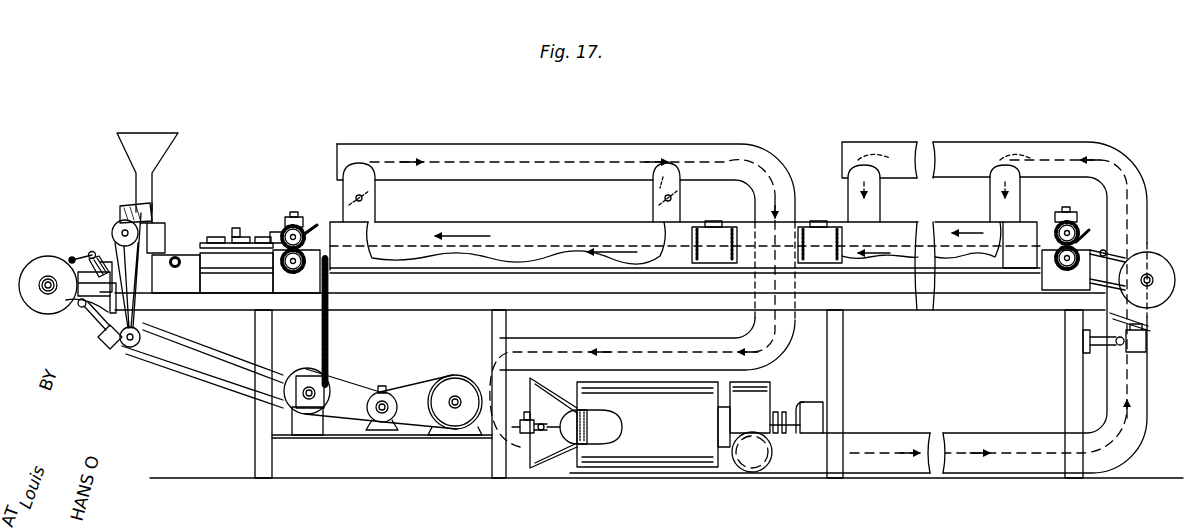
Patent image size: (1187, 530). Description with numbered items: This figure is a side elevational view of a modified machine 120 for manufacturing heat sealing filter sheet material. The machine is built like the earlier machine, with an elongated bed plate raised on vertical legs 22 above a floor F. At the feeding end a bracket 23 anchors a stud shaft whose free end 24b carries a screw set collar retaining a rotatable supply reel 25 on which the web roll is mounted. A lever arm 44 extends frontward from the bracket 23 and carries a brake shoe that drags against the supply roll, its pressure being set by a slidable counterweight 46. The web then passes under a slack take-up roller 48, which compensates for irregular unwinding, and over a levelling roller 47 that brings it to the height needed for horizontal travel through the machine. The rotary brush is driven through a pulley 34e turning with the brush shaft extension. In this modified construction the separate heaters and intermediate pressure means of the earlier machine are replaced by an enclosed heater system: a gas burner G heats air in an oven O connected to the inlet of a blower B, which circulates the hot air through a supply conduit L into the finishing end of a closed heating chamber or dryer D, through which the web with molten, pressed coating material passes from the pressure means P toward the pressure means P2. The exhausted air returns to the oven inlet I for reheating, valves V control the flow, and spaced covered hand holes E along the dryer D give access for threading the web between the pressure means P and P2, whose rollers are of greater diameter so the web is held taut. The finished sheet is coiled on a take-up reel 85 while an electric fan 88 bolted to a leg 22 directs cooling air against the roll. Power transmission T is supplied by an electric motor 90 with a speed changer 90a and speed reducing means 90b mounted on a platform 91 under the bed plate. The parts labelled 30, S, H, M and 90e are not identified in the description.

The machine 120 is at (728, 128).
The feed hopper 30 is at (140, 143).
The sealing and feeding unit S is at (158, 217).
The pulley 34e is at (117, 224).
The levelling roller 47 is at (93, 252).
The slack take-up roller 48 is at (71, 258).
The reel 25 is at (27, 254).
The free end of stud shaft 24b is at (46, 291).
The lever arm 44 is at (68, 312).
The bracket 23 is at (100, 300).
The counterweight 46 is at (112, 350).
The power transmission T is at (280, 413).
The floor F is at (193, 476).
The heater plate H is at (238, 221).
The pressure means P is at (306, 224).
The valves V is at (376, 200).
The covered hand holes E is at (729, 225).
The dryer D is at (862, 230).
The pressure means P2 is at (1062, 206).
The take-up reel 85 is at (1158, 250).
The electric fan 88 is at (1134, 354).
The legs 22 is at (838, 388).
The supply conduit L is at (757, 453).
The blower motor M is at (796, 417).
The blower B is at (745, 427).
The oven O is at (624, 423).
The gas burner G is at (566, 446).
The oven inlet I is at (522, 436).
The electric motor 90 is at (455, 379).
The speed changer 90a is at (386, 400).
The speed reducing means 90b is at (303, 370).
The drive chain 90e is at (330, 349).
The platform 91 is at (346, 439).